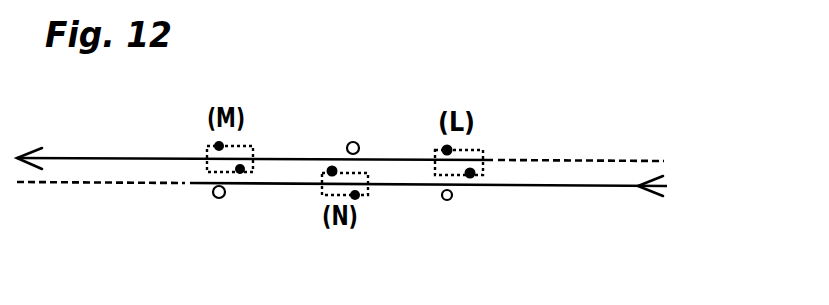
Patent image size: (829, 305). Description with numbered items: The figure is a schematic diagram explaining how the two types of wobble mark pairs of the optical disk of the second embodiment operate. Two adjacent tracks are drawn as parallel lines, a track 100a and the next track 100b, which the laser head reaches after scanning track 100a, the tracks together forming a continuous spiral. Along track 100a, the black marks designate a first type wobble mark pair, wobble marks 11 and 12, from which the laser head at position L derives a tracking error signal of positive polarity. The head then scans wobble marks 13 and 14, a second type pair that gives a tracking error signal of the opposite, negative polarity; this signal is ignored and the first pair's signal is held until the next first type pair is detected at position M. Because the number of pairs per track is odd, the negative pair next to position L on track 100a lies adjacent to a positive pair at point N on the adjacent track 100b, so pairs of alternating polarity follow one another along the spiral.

The track 100a is at (80, 158).
The next track 100b is at (583, 186).
The wobble mark 11 is at (450, 149).
The wobble mark 12 is at (470, 176).
The wobble mark 13 is at (332, 168).
The wobble mark 14 is at (356, 143).